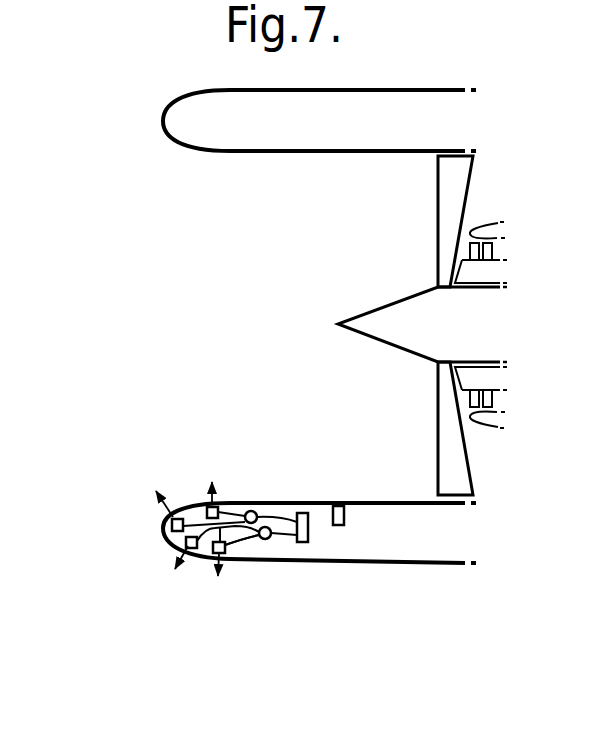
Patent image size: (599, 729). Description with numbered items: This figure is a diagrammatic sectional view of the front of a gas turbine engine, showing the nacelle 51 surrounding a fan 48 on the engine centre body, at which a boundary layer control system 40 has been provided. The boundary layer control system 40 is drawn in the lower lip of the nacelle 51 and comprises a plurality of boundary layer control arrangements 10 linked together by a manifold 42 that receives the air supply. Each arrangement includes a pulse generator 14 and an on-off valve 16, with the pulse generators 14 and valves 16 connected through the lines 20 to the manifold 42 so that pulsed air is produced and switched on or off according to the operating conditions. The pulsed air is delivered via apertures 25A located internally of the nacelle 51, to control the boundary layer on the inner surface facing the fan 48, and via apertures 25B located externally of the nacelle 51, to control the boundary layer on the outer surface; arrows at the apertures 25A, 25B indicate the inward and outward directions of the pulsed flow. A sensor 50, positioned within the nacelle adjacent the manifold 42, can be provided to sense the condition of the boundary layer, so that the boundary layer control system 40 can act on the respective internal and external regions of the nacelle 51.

The boundary layer control arrangement 10 is at (238, 543).
The pulse generator 14 is at (172, 524).
The on-off valve 16 is at (249, 511).
The surface 20 is at (275, 502).
The apertures internally of the nacelle 25A is at (214, 500).
The apertures externally of the nacelle 25B is at (213, 558).
The boundary layer control system 40 is at (178, 487).
The manifold 42 is at (305, 513).
The fan 48 is at (435, 209).
The sensor 50 is at (347, 515).
The nacelle 51 is at (155, 117).